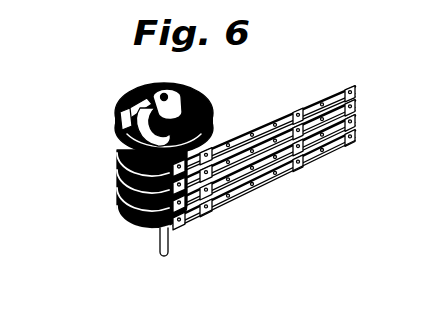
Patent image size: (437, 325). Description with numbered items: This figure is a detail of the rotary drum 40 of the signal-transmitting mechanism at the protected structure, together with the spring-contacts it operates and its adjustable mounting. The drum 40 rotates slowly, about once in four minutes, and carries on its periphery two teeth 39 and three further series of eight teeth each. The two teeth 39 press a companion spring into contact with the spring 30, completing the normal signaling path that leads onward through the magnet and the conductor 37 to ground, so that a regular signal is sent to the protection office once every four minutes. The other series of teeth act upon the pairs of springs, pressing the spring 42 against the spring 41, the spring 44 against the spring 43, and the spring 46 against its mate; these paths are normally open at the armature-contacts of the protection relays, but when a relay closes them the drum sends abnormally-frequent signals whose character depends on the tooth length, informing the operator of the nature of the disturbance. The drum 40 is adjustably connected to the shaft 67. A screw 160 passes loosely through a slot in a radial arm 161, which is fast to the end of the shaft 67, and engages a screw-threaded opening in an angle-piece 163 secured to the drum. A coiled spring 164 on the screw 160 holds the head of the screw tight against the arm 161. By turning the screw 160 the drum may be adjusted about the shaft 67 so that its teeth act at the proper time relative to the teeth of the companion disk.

The spring 30 is at (274, 166).
The conductor 37 is at (357, 130).
The teeth 39 is at (116, 142).
The rotary drum 40 is at (227, 119).
The spring 41 is at (247, 168).
The spring 42 is at (357, 114).
The spring 43 is at (245, 180).
The spring 44 is at (357, 99).
The spring 46 is at (357, 85).
The shaft 67 is at (160, 243).
The screw 160 is at (121, 101).
The radial arm 161 is at (181, 77).
The angle-piece 163 is at (118, 152).
The coiled spring 164 is at (122, 123).